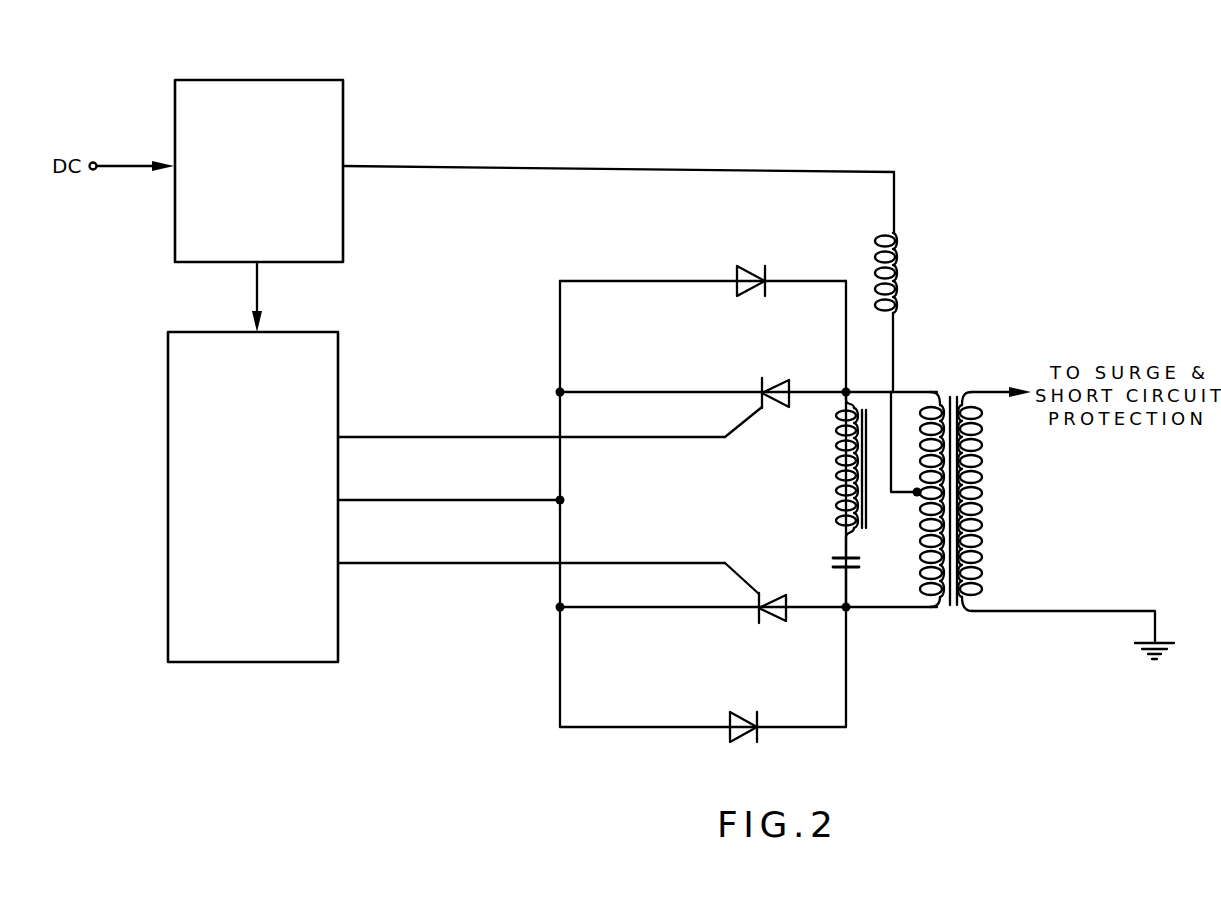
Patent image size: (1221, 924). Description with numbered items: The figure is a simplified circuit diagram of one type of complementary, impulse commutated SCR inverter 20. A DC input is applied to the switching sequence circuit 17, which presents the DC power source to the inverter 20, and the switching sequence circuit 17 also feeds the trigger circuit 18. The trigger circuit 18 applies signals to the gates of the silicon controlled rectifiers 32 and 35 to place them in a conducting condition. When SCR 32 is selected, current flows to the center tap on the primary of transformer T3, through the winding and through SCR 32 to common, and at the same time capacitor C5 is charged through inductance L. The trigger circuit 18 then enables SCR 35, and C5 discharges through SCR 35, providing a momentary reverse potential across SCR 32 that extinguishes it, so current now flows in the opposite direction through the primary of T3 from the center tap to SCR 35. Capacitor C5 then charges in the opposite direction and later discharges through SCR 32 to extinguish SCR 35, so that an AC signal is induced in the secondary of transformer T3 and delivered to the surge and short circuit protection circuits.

The switching sequence circuit 17 is at (323, 80).
The trigger circuit 18 is at (327, 331).
The inverter 20 is at (924, 162).
The silicon controlled rectifier 32 is at (778, 406).
The silicon controlled rectifier 35 is at (773, 592).
The inductance L is at (859, 475).
The capacitor C5 is at (863, 579).
The transformer T3 is at (951, 514).